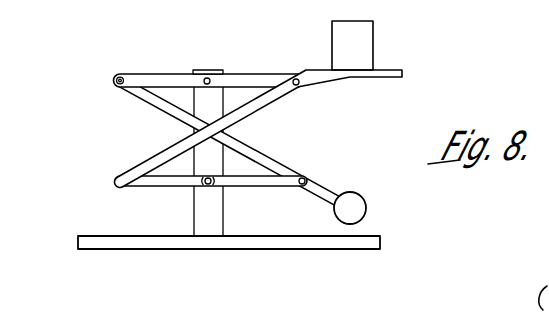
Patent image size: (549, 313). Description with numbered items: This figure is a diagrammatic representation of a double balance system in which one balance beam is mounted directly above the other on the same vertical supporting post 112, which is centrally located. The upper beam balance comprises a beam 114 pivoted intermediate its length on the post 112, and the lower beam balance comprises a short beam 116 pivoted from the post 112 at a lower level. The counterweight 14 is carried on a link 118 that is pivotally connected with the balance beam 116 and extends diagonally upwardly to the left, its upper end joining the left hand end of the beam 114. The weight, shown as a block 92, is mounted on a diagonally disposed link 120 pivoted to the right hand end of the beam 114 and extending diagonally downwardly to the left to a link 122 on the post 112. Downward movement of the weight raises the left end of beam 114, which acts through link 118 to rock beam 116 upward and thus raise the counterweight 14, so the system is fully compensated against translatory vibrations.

The supporting post 112 is at (210, 222).
The beam 114 is at (169, 75).
The short beam 116 is at (283, 186).
The link 118 is at (274, 158).
The link 120 is at (156, 153).
The link 122 is at (141, 184).
The block 92 is at (364, 45).
The counterweight 14 is at (353, 194).